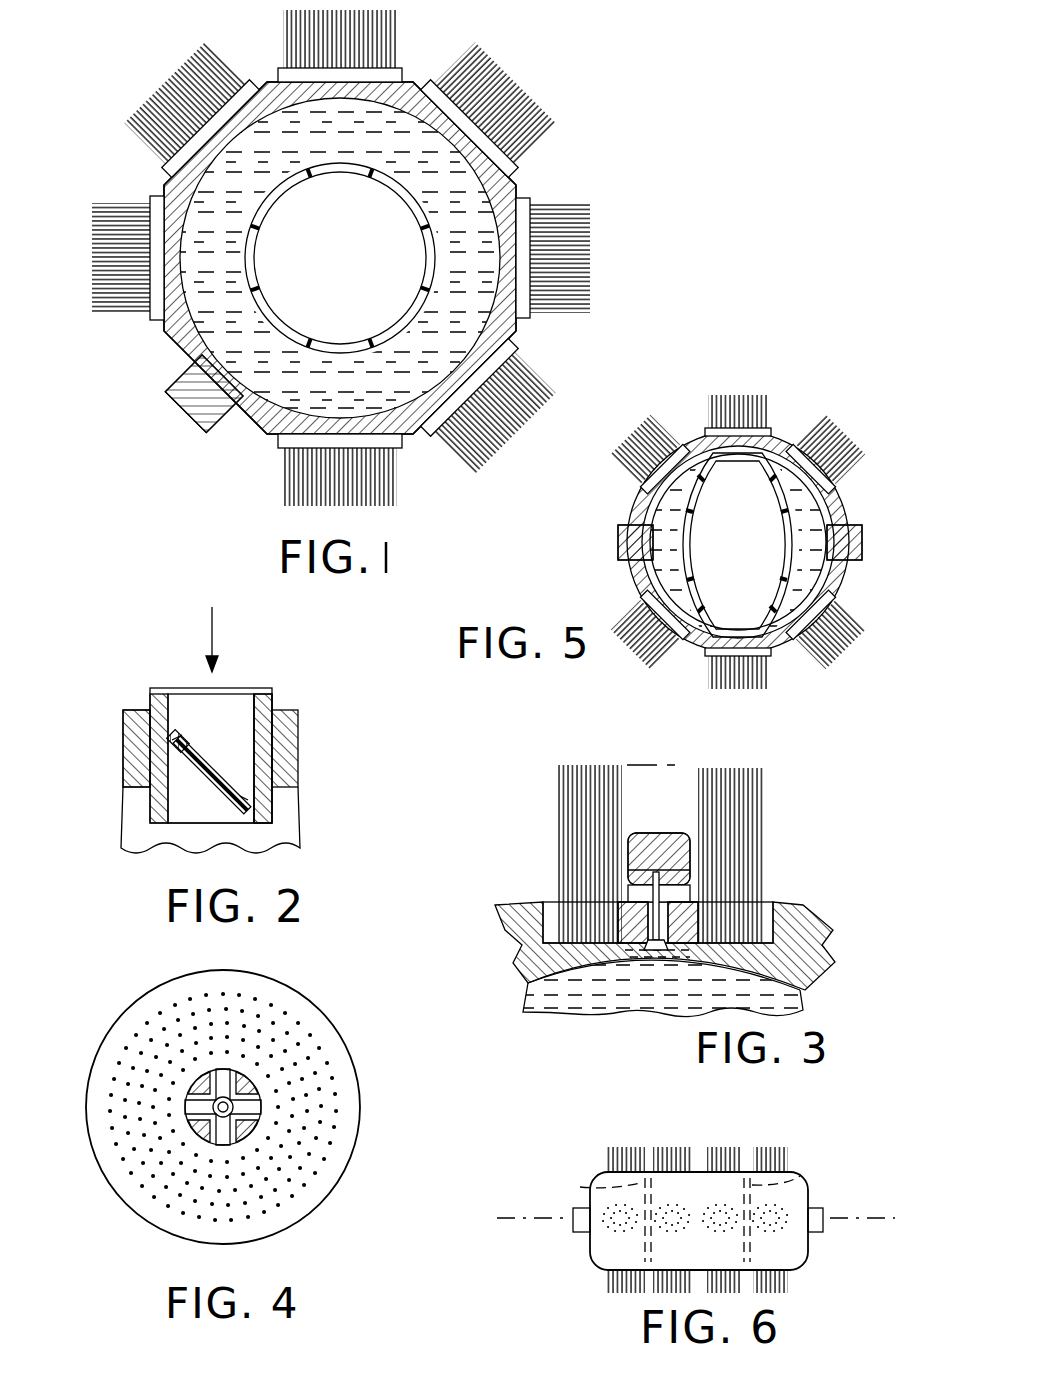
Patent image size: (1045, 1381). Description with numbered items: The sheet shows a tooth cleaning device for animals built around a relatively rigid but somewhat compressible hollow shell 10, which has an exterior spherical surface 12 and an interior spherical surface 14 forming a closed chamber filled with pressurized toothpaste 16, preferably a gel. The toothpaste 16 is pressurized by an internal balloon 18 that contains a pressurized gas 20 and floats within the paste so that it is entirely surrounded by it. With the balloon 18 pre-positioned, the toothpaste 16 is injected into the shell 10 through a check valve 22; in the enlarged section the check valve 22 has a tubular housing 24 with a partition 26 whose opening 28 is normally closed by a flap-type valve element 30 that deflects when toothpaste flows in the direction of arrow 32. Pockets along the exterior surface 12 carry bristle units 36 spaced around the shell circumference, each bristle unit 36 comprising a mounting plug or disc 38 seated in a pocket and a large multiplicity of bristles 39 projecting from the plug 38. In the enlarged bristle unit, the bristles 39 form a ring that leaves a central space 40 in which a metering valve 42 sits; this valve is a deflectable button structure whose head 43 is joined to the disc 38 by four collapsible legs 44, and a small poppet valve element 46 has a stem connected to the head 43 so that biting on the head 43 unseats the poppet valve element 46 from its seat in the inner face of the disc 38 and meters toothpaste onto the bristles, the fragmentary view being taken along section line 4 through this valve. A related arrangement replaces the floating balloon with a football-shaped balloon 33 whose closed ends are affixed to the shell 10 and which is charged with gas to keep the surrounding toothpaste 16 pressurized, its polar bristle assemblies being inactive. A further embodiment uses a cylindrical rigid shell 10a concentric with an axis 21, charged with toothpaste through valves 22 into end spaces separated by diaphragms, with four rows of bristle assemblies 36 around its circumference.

In FIG. 1, the hollow shell 10 is at (235, 430).
In FIG. 5, the hollow shell 10 is at (697, 440).
In FIG. 6, the rigid shell 10a is at (605, 1180).
In FIG. 1, the exterior spherical surface 12 is at (158, 338).
In FIG. 2, the exterior spherical surface 12 is at (295, 714).
In FIG. 3, the exterior spherical surface 12 is at (808, 920).
In FIG. 1, the interior spherical surface 14 is at (490, 188).
In FIG. 2, the interior spherical surface 14 is at (125, 800).
In FIG. 3, the interior spherical surface 14 is at (528, 988).
In FIG. 1, the toothpaste 16 is at (210, 195).
In FIG. 5, the toothpaste 16 is at (660, 505).
In FIG. 2, the toothpaste 16 is at (132, 708).
In FIG. 3, the toothpaste 16 is at (580, 995).
In FIG. 1, the internal balloon 18 is at (262, 225).
In FIG. 1, the pressurized gas 20 is at (356, 271).
In FIG. 6, the axis 21 is at (522, 1218).
In FIG. 1, the check valve 22 is at (172, 390).
In FIG. 5, the check valve 22 is at (618, 541).
In FIG. 2, the check valve 22 is at (150, 692).
In FIG. 6, the check valve 22 is at (578, 1228).
In FIG. 2, the tubular housing 24 is at (268, 737).
In FIG. 2, the partition 26 is at (200, 748).
In FIG. 2, the opening 28 is at (226, 762).
In FIG. 2, the flap-type valve element 30 is at (212, 780).
In FIG. 2, the arrow 32 is at (212, 632).
In FIG. 5, the football-shaped balloon 33 is at (693, 525).
In FIG. 1, the bristle unit 36 is at (285, 478).
In FIG. 5, the bristle unit 36 is at (842, 612).
In FIG. 3, the bristle unit 36 is at (557, 833).
In FIG. 6, the bristle unit 36 is at (678, 1148).
In FIG. 1, the mounting plug 38 is at (280, 77).
In FIG. 3, the mounting plug 38 is at (543, 905).
In FIG. 4, the mounting plug 38 is at (352, 1094).
In FIG. 1, the bristles 39 is at (540, 132).
In FIG. 3, the bristles 39 is at (763, 807).
In FIG. 4, the bristles 39 is at (327, 1062).
In FIG. 3, the central space 40 is at (627, 765).
In FIG. 3, the metering valve 42 is at (670, 830).
In FIG. 3, the head 43 is at (645, 830).
In FIG. 3, the collapsible legs 44 is at (628, 890).
In FIG. 4, the collapsible legs 44 is at (197, 1085).
In FIG. 3, the poppet valve element 46 is at (657, 950).
In FIG. 3, the section line 4— 4 is at (456, 915).